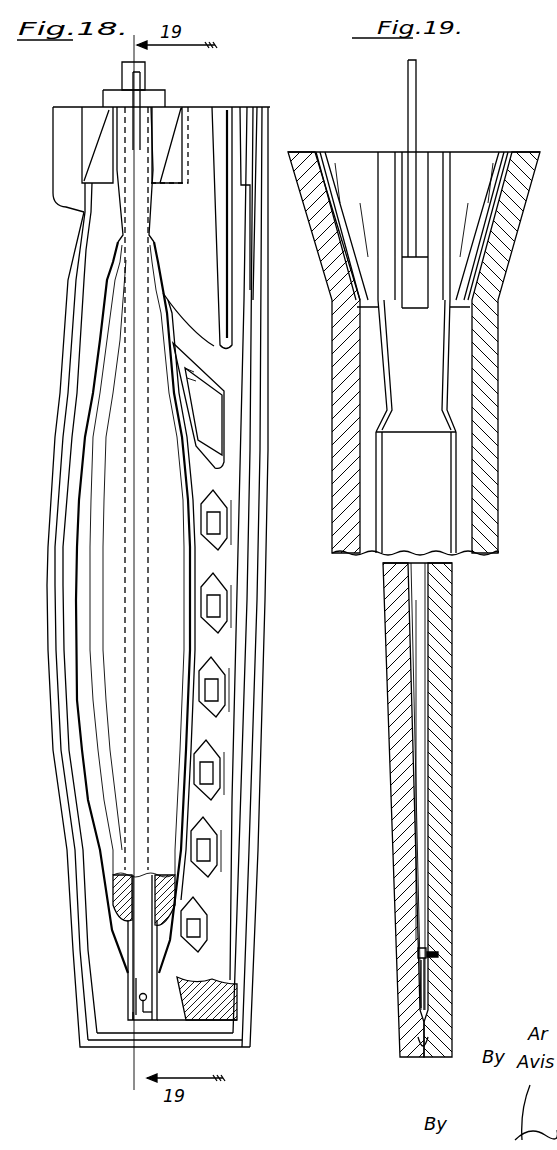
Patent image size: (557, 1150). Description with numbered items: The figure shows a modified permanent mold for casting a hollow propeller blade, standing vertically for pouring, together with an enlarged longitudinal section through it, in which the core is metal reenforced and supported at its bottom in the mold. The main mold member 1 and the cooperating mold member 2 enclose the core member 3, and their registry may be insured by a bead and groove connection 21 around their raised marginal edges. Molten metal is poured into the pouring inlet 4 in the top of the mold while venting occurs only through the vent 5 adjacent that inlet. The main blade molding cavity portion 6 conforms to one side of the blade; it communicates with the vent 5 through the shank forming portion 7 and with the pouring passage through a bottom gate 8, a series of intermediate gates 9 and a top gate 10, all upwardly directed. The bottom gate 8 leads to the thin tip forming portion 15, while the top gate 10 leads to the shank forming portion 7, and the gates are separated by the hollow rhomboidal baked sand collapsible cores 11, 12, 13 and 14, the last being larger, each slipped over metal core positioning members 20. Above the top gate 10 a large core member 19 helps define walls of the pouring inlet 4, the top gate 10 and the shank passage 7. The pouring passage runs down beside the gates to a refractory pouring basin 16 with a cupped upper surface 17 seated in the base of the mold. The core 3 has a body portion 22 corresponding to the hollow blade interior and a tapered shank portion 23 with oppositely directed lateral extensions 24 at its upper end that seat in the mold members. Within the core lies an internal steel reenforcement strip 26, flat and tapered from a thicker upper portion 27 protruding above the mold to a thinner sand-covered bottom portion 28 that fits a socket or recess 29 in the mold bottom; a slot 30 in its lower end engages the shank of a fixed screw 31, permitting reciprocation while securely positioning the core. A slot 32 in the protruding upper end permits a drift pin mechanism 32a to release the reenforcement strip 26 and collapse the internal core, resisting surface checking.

In FIG. 18, the main mold member 1 is at (237, 322).
In FIG. 19, the main mold member 1 is at (487, 342).
In FIG. 19, the cooperating mold member 2 is at (342, 340).
In FIG. 18, the core member 3 is at (115, 389).
In FIG. 19, the core member 3 is at (443, 540).
In FIG. 18, the pouring inlet 4 is at (245, 107).
In FIG. 18, the vent 5 is at (85, 135).
In FIG. 19, the vent 5 is at (488, 165).
In FIG. 18, the main blade molding cavity portion 6 is at (77, 586).
In FIG. 19, the main blade molding cavity portion 6 is at (427, 613).
In FIG. 18, the shank forming portion 7 is at (108, 264).
In FIG. 19, the shank forming portion 7 is at (368, 463).
In FIG. 18, the bottom gate 8 is at (173, 967).
In FIG. 18, the intermediate gates 9 is at (195, 883).
In FIG. 18, the top gate 10 is at (200, 350).
In FIG. 18, the collapsible core 11 is at (210, 930).
In FIG. 18, the collapsible core 12 is at (220, 780).
In FIG. 18, the collapsible core 13 is at (222, 621).
In FIG. 18, the collapsible core 14 is at (228, 430).
In FIG. 18, the thin tip forming portion 15 is at (123, 943).
In FIG. 18, the refractory pouring basin 16 is at (223, 1013).
In FIG. 18, the cupped upper surface 17 is at (220, 995).
In FIG. 18, the large core member 19 is at (213, 282).
In FIG. 18, the core positioning members 20 is at (222, 676).
In FIG. 18, the bead and groove connection 21 is at (62, 724).
In FIG. 19, the bead and groove connection 21 is at (420, 1035).
In FIG. 18, the body portion 22 is at (110, 663).
In FIG. 18, the tapered shank portion 23 is at (132, 205).
In FIG. 19, the tapered shank portion 23 is at (427, 385).
In FIG. 18, the lateral extensions 24 is at (167, 153).
In FIG. 19, the lateral extensions 24 is at (420, 263).
In FIG. 18, the internal steel reenforcement strip 26 is at (88, 437).
In FIG. 19, the internal steel reenforcement strip 26 is at (427, 865).
In FIG. 18, the upper portion of strip 27 is at (125, 76).
In FIG. 19, the upper portion of strip 27 is at (416, 82).
In FIG. 18, the bottom portion of strip 28 is at (133, 1020).
In FIG. 18, the socket or recess 29 is at (132, 997).
In FIG. 19, the socket or recess 29 is at (420, 990).
In FIG. 18, the slot 30 is at (157, 1013).
In FIG. 19, the slot 30 is at (425, 977).
In FIG. 18, the fixed screw 31 is at (142, 995).
In FIG. 19, the fixed screw 31 is at (418, 953).
In FIG. 18, the slot 32 is at (132, 72).
In FIG. 18, the drift pin mechanism 32a is at (150, 96).